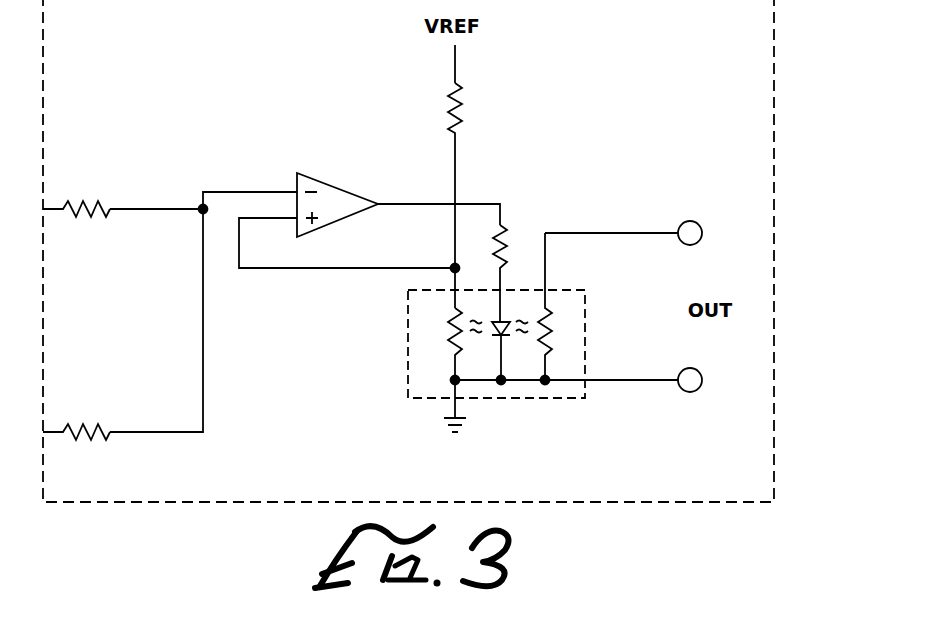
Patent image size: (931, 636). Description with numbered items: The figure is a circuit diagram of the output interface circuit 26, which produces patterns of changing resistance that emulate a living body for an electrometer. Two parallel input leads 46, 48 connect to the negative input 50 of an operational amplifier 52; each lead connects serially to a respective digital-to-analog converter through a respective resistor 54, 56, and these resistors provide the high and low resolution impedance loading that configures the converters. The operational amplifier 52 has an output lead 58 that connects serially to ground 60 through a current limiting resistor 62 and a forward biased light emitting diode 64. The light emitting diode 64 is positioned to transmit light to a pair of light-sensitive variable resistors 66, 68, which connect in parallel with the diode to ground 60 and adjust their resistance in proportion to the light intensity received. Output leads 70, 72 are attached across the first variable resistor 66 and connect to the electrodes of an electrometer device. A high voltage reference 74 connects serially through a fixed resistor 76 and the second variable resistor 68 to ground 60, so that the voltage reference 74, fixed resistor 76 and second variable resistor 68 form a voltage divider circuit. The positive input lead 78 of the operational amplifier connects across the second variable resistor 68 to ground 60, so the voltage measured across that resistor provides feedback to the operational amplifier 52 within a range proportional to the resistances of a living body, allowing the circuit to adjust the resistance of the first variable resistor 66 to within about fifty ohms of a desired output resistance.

The output interface circuit 26 is at (778, 205).
The input lead 46 is at (153, 432).
The input lead 48 is at (152, 208).
The negative input 50 is at (297, 192).
The operational amplifier 52 is at (328, 180).
The resistor 54 is at (80, 437).
The resistor 56 is at (78, 214).
The output lead 58 is at (478, 203).
The ground 60 is at (453, 433).
The current limiting resistor 62 is at (505, 227).
The light emitting diode 64 is at (504, 325).
The variable resistor 66 is at (548, 322).
The variable resistor 68 is at (453, 320).
The output lead 70 is at (692, 387).
The output lead 72 is at (690, 233).
The high voltage reference 74 is at (455, 67).
The fixed resistor 76 is at (462, 115).
The positive input lead 78 is at (288, 270).